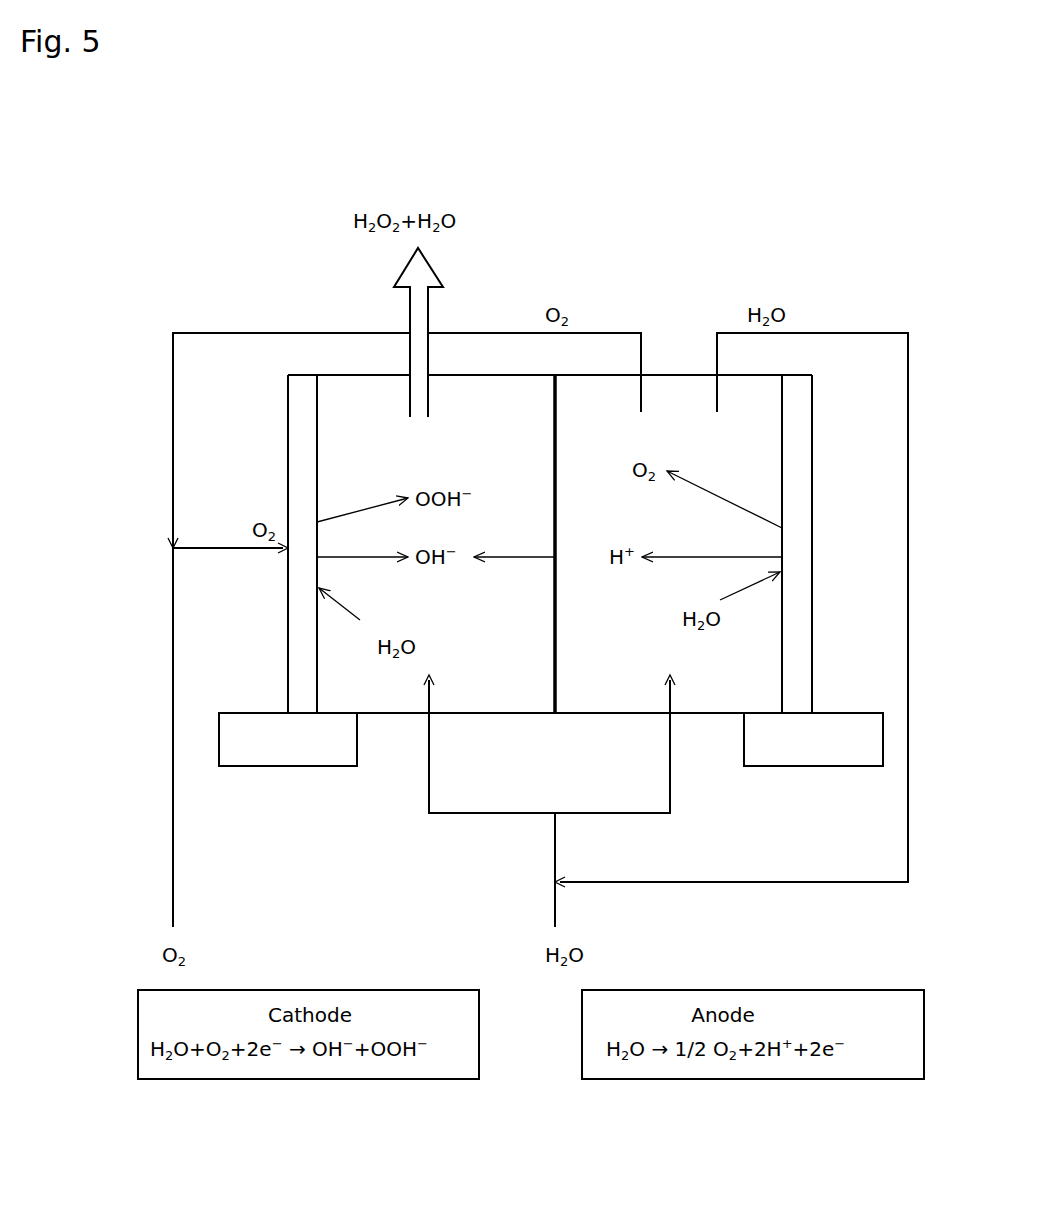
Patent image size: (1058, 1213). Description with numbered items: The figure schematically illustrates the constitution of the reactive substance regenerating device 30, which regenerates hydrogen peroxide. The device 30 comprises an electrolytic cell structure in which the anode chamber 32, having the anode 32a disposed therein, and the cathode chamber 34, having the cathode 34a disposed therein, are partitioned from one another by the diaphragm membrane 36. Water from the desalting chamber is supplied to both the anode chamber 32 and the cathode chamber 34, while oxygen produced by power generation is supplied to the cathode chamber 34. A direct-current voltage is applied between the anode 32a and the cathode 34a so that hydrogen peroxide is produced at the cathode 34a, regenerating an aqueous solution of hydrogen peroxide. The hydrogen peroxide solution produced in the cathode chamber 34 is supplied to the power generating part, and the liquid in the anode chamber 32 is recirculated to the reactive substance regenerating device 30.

The reactive substance regenerating device 30 is at (680, 270).
The anode chamber 32 is at (715, 687).
The anode 32a is at (800, 599).
The cathode chamber 34 is at (375, 697).
The cathode 34a is at (298, 450).
The diaphragm membrane 36 is at (553, 440).